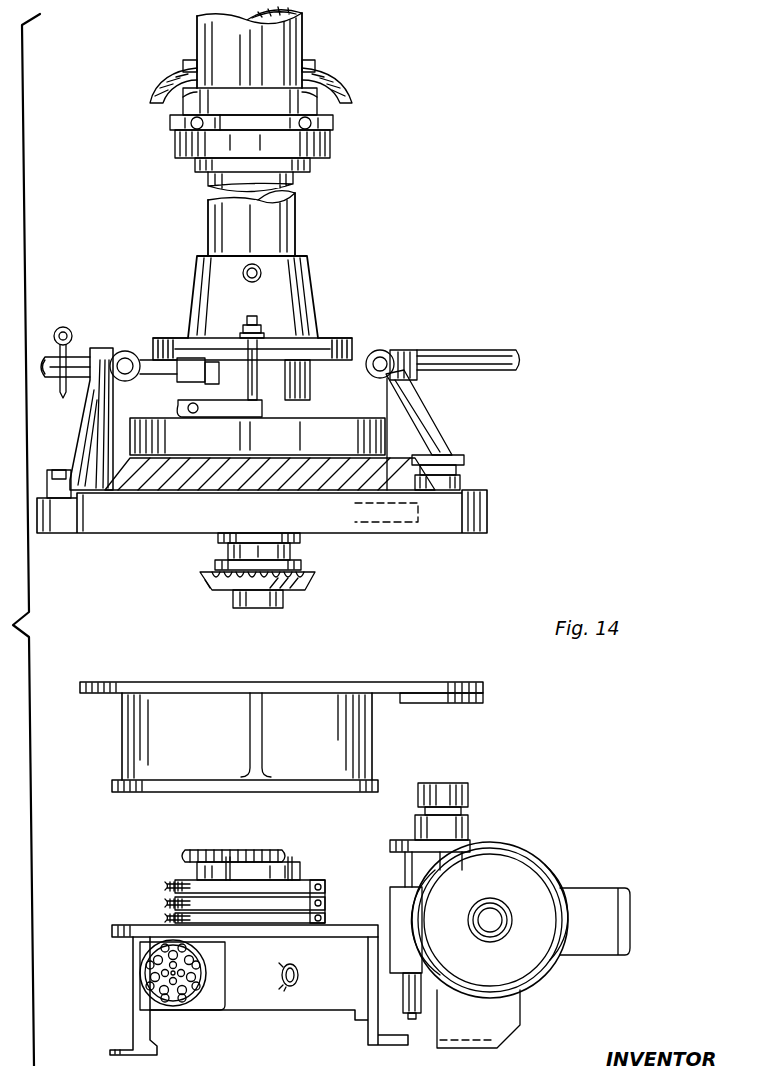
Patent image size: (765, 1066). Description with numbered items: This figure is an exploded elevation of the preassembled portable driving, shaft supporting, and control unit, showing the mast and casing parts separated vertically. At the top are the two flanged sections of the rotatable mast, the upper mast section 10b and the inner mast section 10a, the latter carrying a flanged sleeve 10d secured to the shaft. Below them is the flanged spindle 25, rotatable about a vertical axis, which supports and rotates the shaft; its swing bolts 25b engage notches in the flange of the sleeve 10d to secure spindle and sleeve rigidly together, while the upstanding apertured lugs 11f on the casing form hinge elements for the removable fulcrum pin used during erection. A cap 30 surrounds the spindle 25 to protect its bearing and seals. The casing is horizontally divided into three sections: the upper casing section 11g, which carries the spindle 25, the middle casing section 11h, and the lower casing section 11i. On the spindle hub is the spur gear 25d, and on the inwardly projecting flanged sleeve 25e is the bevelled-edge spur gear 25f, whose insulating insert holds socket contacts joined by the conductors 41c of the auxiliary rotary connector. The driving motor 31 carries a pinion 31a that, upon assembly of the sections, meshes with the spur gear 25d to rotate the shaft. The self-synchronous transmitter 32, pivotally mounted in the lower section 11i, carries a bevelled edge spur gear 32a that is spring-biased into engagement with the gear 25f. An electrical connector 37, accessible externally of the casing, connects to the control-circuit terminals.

The inner mast section 10a is at (285, 232).
The upper mast section 10b is at (300, 50).
The flanged sleeve 10d is at (300, 297).
The upstanding apertured lugs 11f is at (105, 348).
The upper casing section 11g is at (487, 512).
The middle casing section 11h is at (135, 737).
The lower casing section 11i is at (234, 995).
The flanged spindle 25 is at (215, 393).
The swing bolts 25b is at (250, 318).
The spur gear 25d is at (418, 522).
The inwardly projecting flanged sleeve 25e is at (290, 550).
The bevelled-edge spur gear 25f is at (300, 584).
The cap 30 is at (330, 427).
The driving motor 31 is at (505, 852).
The pinion 31a is at (468, 800).
The self-synchronous transmitter 32 is at (197, 874).
The bevelled edge spur gear 32a is at (180, 856).
The electrical connector 37 is at (150, 970).
The conductors 41c is at (222, 545).